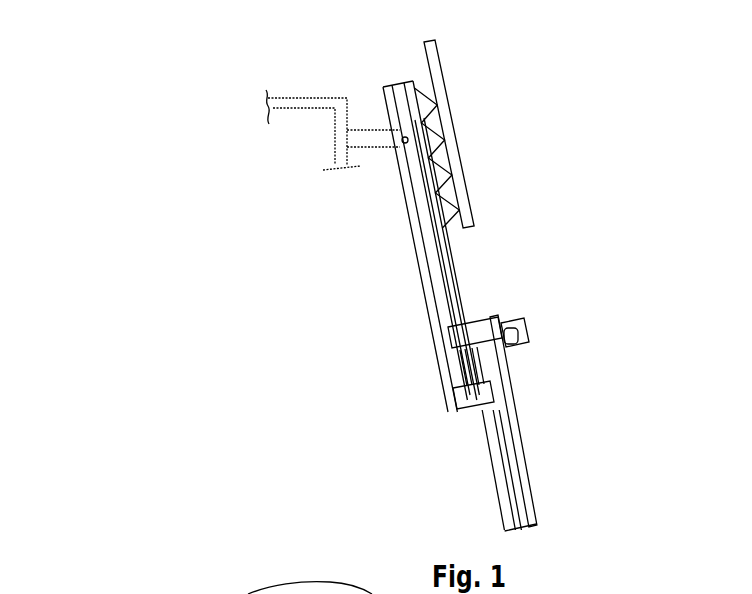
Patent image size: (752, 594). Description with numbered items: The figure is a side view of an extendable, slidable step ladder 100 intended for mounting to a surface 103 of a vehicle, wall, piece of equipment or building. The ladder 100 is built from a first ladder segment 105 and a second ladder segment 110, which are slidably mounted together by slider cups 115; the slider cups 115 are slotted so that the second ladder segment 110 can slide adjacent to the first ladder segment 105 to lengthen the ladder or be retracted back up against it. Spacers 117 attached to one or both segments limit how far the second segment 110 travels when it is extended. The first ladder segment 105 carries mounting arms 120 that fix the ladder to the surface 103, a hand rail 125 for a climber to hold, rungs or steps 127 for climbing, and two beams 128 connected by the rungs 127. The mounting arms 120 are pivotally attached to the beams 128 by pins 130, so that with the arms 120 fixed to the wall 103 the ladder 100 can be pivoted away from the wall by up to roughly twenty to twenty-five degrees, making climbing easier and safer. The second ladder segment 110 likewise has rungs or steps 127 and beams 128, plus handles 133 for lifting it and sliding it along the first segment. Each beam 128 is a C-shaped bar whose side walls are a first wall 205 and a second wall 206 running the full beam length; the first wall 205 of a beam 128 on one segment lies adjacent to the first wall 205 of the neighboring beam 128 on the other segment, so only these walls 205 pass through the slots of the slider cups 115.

The extendable step ladder 100 is at (185, 283).
The surface 103 is at (312, 104).
The first ladder segment 105 is at (413, 227).
The second ladder segment 110 is at (527, 510).
The slider cups 115 is at (473, 333).
The spacers 117 is at (452, 370).
The mounting arms 120 is at (365, 140).
The hand rail 125 is at (452, 142).
The rungs or steps 127 is at (435, 280).
The beams 128 is at (436, 246).
The pins 130 is at (400, 140).
The handles 133 is at (524, 333).
The first wall 205 is at (455, 298).
The second wall 206 is at (433, 300).